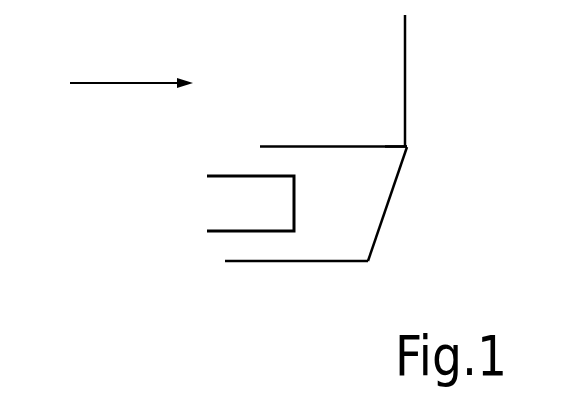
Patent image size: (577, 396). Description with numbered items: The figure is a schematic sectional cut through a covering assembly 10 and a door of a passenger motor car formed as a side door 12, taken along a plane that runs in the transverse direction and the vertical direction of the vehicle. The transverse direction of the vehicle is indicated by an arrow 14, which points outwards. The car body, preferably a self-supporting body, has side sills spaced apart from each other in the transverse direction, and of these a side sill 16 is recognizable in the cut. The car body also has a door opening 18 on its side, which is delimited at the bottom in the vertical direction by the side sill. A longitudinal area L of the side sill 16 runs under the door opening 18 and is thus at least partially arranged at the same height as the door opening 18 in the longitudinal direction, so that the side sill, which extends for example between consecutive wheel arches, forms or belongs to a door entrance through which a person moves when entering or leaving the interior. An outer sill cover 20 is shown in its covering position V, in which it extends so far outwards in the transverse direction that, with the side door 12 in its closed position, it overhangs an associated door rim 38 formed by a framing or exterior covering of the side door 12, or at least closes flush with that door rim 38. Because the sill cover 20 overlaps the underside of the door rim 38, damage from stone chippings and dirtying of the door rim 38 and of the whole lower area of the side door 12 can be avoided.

The covering assembly 10 is at (403, 166).
The side door 12 is at (406, 67).
The arrow 14 is at (128, 83).
The side sill 16 is at (267, 222).
The door opening 18 is at (360, 90).
The sill cover 20 is at (450, 204).
The covering position V is at (395, 205).
The door rim 38 is at (408, 141).
The longitudinal area L is at (219, 247).